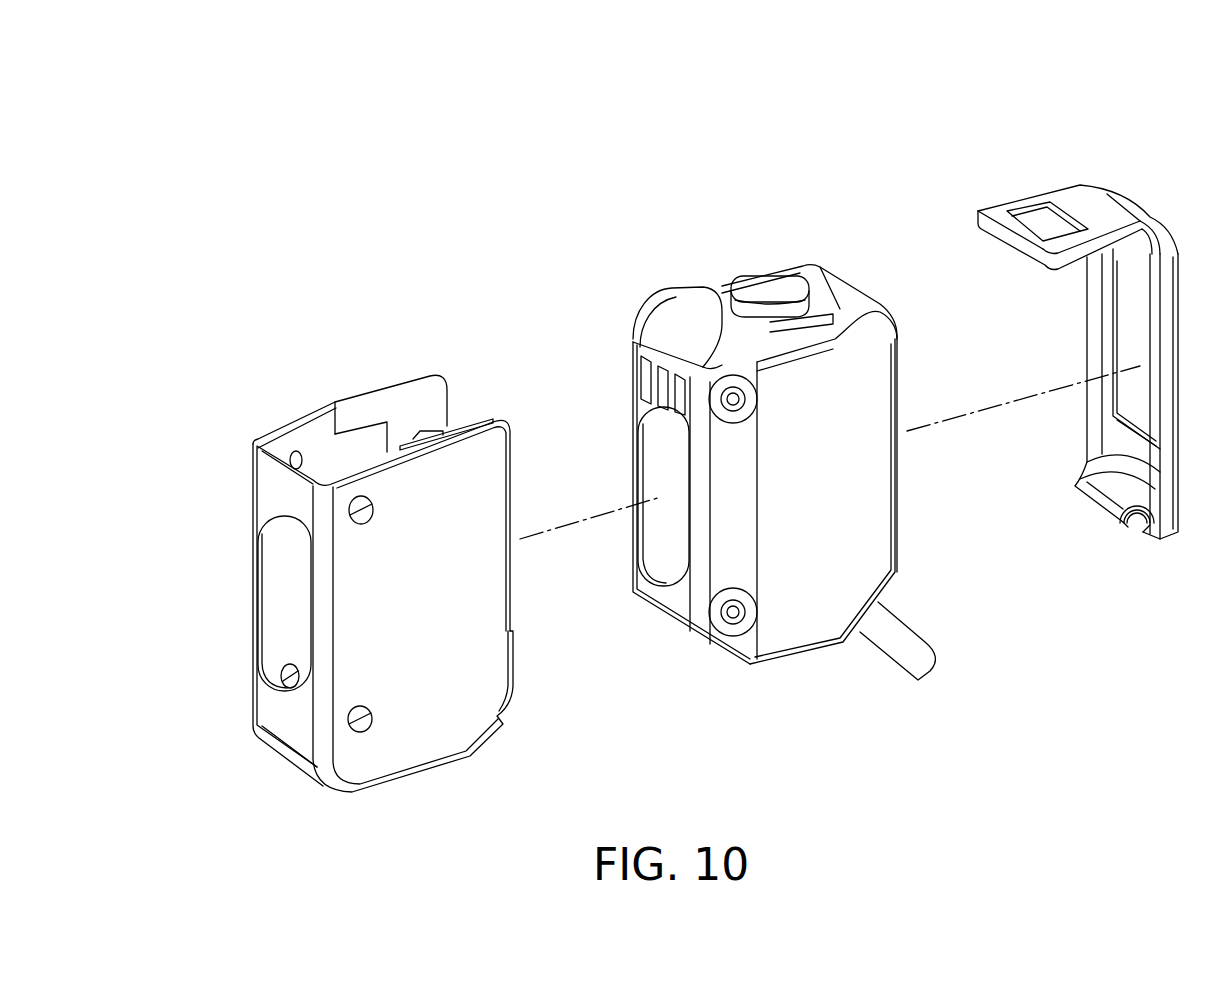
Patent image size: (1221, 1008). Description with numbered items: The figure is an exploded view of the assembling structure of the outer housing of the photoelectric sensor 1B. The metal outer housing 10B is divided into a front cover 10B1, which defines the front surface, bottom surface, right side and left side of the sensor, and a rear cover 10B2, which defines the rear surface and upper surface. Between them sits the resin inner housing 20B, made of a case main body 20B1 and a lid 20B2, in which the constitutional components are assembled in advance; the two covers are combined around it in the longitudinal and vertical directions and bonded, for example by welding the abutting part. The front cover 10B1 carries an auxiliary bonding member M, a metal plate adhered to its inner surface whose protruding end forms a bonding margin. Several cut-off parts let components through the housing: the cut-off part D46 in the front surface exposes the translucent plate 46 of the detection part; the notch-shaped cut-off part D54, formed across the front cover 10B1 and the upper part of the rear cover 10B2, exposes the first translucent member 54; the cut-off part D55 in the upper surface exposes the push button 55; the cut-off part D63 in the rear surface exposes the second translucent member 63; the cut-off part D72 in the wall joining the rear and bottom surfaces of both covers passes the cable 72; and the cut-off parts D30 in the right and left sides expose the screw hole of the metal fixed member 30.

The photoelectric sensor 1B is at (265, 130).
The outer housing 10B is at (679, 440).
The front cover 10B1 is at (308, 442).
The rear cover 10B2 is at (1092, 206).
The auxiliary bonding member M is at (396, 398).
The cut-off part D54 is at (273, 433).
The cut-off part D30 is at (290, 455).
The cut-off part D46 is at (257, 592).
The cut-off part D55 is at (1027, 205).
The cut-off part D63 is at (1117, 322).
The cut-off part D72 is at (1137, 521).
The inner housing 20B is at (850, 725).
The case main body 20B1 is at (748, 634).
The lid 20B2 is at (805, 617).
The fixed member 30 is at (727, 400).
The translucent plate 46 is at (657, 460).
The first translucent member 54 is at (675, 313).
The push button 55 is at (775, 277).
The second translucent member 63 is at (900, 384).
The cable 72 is at (897, 640).